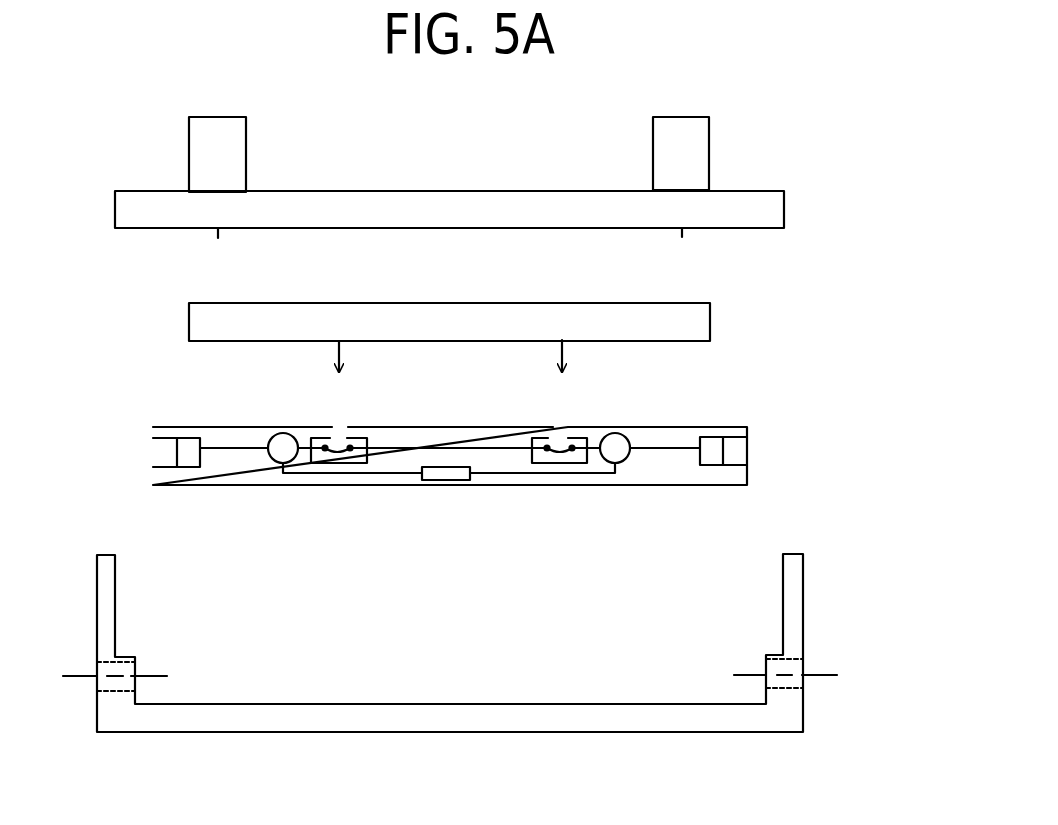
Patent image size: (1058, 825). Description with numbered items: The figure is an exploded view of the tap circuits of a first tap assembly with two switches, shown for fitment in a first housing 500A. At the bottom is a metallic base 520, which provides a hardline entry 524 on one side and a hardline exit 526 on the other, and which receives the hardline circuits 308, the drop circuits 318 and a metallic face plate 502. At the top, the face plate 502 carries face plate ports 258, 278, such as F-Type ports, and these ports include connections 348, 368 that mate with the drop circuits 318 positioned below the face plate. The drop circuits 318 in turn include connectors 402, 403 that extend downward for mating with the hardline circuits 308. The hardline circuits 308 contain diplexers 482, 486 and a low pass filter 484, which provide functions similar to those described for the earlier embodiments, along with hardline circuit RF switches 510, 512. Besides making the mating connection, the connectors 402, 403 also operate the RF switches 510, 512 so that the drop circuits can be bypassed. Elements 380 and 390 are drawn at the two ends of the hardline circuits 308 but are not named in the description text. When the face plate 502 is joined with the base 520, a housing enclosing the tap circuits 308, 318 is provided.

The first housing 500A is at (807, 110).
The face plate port 258 is at (247, 157).
The face plate port 278 is at (711, 157).
The metallic face plate 502 is at (786, 205).
The connection 348 is at (232, 233).
The connection 368 is at (693, 232).
The drop circuits 318 is at (713, 322).
The connector 402 is at (343, 355).
The connector 403 is at (566, 354).
The hardline circuits 308 is at (725, 427).
The first connector 380 is at (183, 465).
The second connector 390 is at (710, 460).
The diplexer 482 is at (273, 462).
The diplexer 486 is at (628, 455).
The low pass filter 484 is at (465, 478).
The hardline circuit RF switch 510 is at (352, 465).
The hardline circuit RF switch 512 is at (578, 467).
The metallic base 520 is at (804, 603).
The hardline entry 524 is at (85, 660).
The hardline exit 526 is at (813, 655).